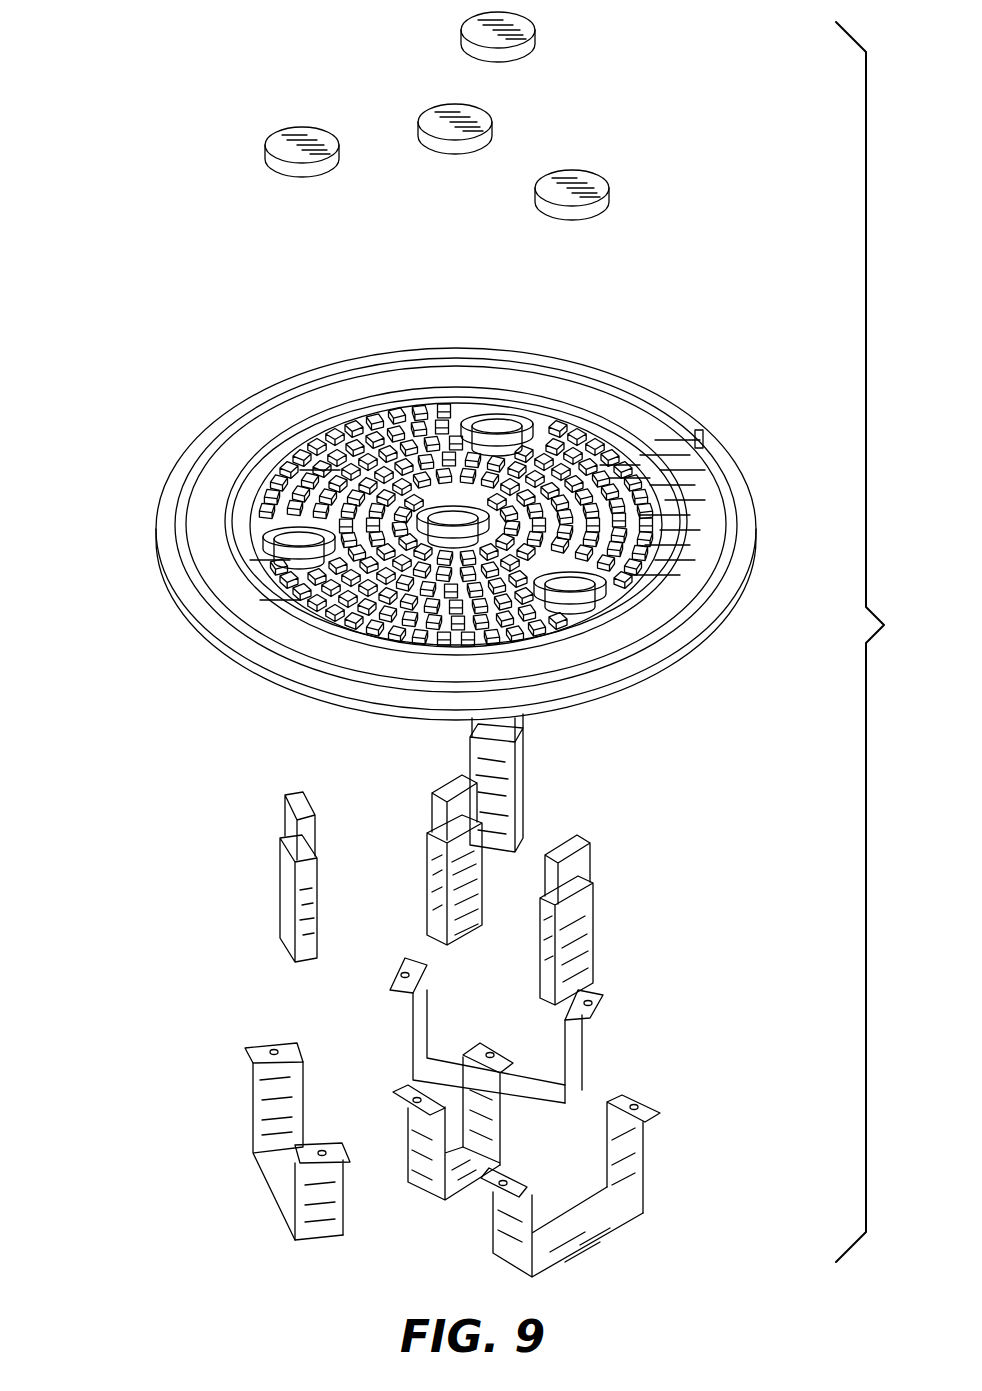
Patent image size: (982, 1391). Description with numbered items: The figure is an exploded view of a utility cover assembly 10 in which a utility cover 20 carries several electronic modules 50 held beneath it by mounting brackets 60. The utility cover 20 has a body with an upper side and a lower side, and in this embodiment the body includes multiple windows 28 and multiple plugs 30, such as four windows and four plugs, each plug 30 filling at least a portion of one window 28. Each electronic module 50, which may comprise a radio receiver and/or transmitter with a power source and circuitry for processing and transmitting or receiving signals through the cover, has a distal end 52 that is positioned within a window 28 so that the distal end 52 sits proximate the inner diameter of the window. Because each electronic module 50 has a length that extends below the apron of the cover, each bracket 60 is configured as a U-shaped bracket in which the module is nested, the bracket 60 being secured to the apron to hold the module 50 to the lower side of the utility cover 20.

The utility cover assembly 10 is at (135, 266).
The utility cover 20 is at (752, 488).
The window 28 is at (432, 510).
The plug 30 is at (534, 43).
The electronic module 50 is at (528, 780).
The distal end 52 is at (440, 778).
The mounting bracket 60 is at (600, 1050).